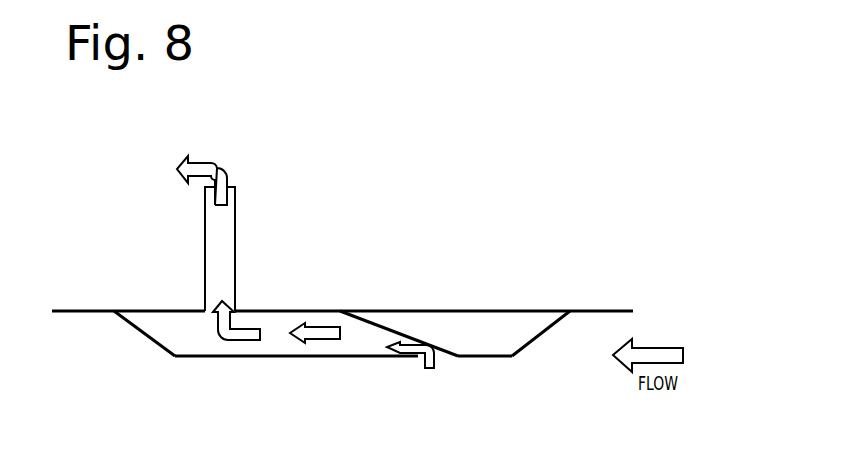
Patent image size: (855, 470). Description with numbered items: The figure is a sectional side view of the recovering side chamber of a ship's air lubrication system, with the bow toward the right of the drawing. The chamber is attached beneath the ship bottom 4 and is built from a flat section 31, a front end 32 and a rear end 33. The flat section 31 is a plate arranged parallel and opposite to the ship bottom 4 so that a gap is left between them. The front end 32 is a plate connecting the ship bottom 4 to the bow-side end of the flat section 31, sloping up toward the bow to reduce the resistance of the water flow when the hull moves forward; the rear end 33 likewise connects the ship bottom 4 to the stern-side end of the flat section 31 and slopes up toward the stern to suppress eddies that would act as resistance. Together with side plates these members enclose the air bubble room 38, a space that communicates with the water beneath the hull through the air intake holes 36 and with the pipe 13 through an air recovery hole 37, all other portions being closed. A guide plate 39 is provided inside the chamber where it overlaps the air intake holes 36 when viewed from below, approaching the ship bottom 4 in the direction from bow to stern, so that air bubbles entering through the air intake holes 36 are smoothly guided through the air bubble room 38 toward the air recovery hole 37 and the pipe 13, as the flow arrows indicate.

The ship bottom 4 is at (83, 312).
The pipe 13 is at (237, 249).
The flat section 31 is at (325, 357).
The front end 32 is at (542, 335).
The rear end 33 is at (143, 338).
The air intake holes 36 is at (448, 358).
The air recovery hole 37 is at (206, 313).
The air bubble room 38 is at (280, 340).
The guide plate 39 is at (433, 331).